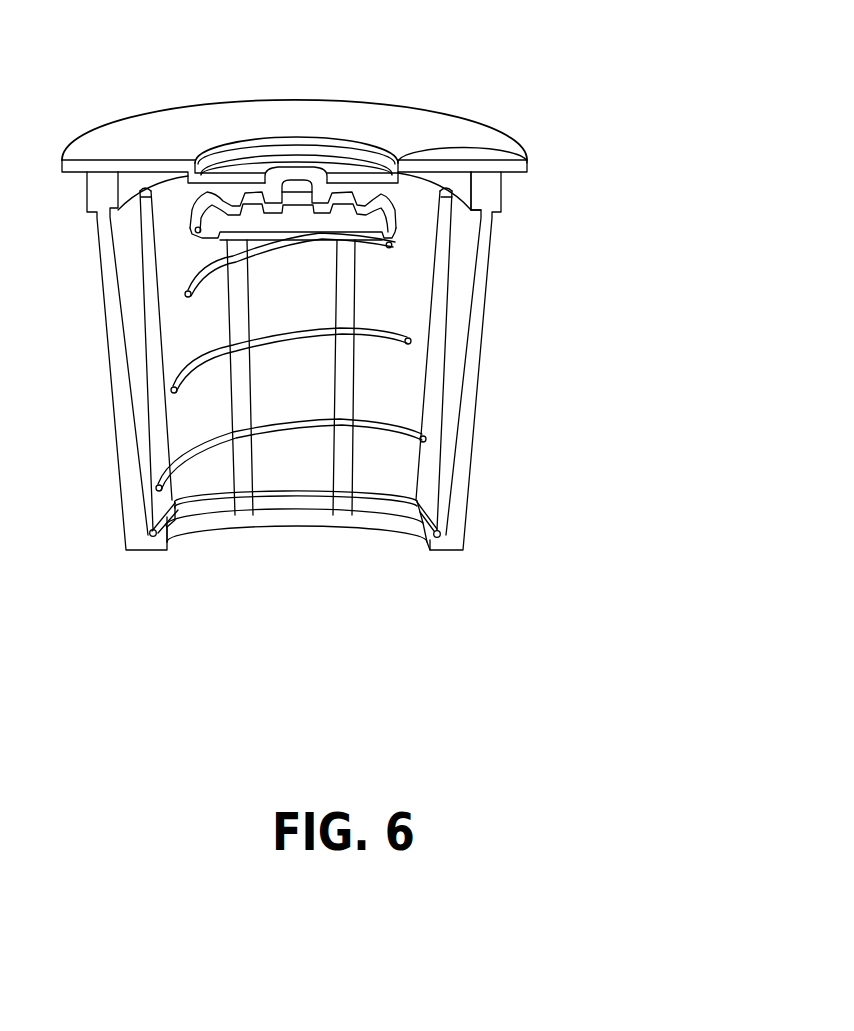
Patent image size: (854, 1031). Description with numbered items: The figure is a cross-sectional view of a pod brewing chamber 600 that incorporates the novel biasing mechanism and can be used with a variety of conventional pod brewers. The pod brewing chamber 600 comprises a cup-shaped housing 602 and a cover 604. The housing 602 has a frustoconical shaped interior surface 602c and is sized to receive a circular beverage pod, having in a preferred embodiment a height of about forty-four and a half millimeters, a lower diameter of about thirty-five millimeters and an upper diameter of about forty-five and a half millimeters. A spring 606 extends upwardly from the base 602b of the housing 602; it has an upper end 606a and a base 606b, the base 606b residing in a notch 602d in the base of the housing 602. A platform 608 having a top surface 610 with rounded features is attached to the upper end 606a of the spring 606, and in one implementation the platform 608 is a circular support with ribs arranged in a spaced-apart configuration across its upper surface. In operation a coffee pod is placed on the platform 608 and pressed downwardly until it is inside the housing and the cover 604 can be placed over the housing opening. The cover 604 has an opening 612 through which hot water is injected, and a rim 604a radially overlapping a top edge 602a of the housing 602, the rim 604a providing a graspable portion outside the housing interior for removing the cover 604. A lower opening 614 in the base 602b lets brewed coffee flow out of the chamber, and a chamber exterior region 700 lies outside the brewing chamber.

The pod brewing chamber 600 is at (540, 112).
The cup-shaped housing 602 is at (453, 343).
The top edge of the housing 602a is at (490, 182).
The base of the housing 602b is at (421, 535).
The frustoconical shaped interior surface 602c is at (450, 375).
The notch 602d is at (438, 507).
The cover 604 is at (352, 133).
The rim 604a is at (518, 186).
The spring 606 is at (200, 350).
The upper end of the spring 606a is at (318, 238).
The base of the spring 606b is at (293, 493).
The platform 608 is at (525, 163).
The top surface 610 is at (195, 200).
The opening 612 is at (283, 173).
The lower opening 614 is at (273, 540).
The chamber exterior region 700 is at (78, 362).